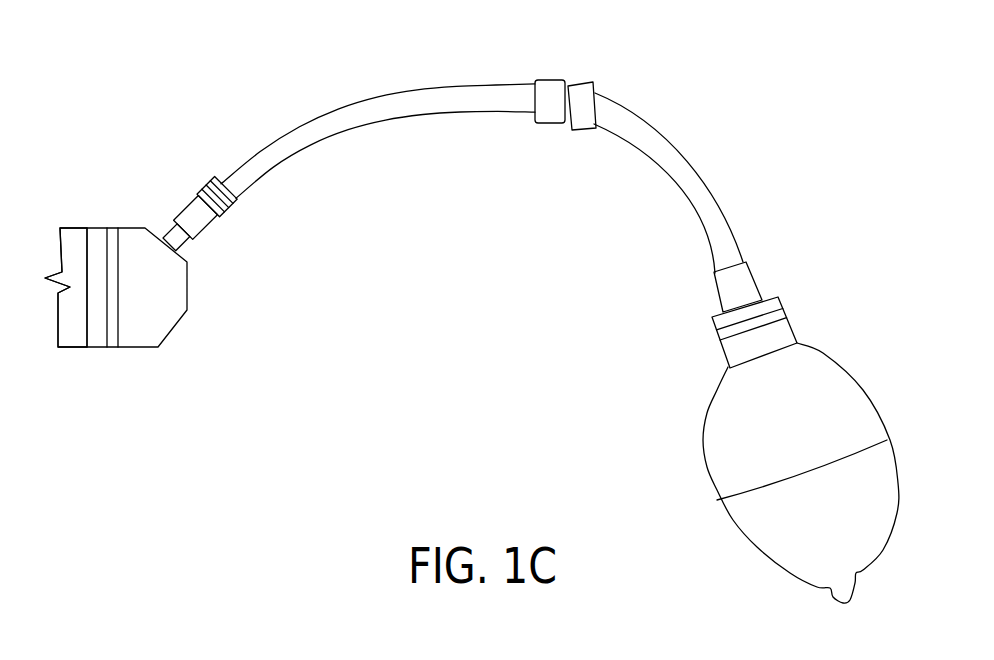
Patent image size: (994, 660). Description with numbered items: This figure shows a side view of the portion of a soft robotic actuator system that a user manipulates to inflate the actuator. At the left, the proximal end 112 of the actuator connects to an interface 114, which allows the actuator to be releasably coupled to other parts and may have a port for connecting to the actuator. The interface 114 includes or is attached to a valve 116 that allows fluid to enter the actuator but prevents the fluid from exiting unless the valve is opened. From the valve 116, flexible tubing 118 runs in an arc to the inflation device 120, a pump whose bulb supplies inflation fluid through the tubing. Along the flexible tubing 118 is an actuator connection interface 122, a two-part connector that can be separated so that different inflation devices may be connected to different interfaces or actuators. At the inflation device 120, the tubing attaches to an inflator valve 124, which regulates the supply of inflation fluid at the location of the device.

The proximal end 112 is at (63, 208).
The interface 114 is at (142, 333).
The valve 116 is at (200, 237).
The flexible tubing 118 is at (244, 170).
The inflation device 120 is at (717, 463).
The actuator connection interface 122 is at (578, 110).
The inflator valve 124 is at (780, 300).